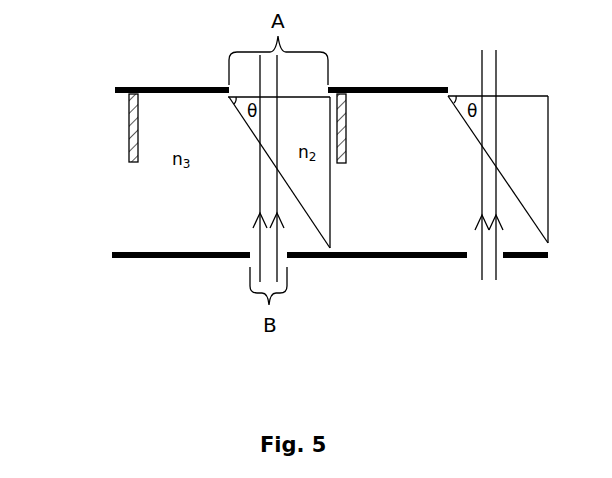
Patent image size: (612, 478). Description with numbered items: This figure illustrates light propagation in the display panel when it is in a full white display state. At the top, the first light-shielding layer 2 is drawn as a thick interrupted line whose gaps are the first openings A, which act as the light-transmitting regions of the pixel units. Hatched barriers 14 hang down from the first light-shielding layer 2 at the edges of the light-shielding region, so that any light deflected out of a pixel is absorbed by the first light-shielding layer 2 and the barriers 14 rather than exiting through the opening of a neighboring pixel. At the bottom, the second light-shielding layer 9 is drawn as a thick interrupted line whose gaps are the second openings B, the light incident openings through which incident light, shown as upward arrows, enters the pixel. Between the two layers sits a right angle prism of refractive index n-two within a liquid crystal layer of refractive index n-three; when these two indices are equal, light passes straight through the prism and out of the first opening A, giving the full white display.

The first light-shielding layer 2 is at (115, 89).
The barrier 14 is at (129, 145).
The second light-shielding layer 9 is at (112, 253).